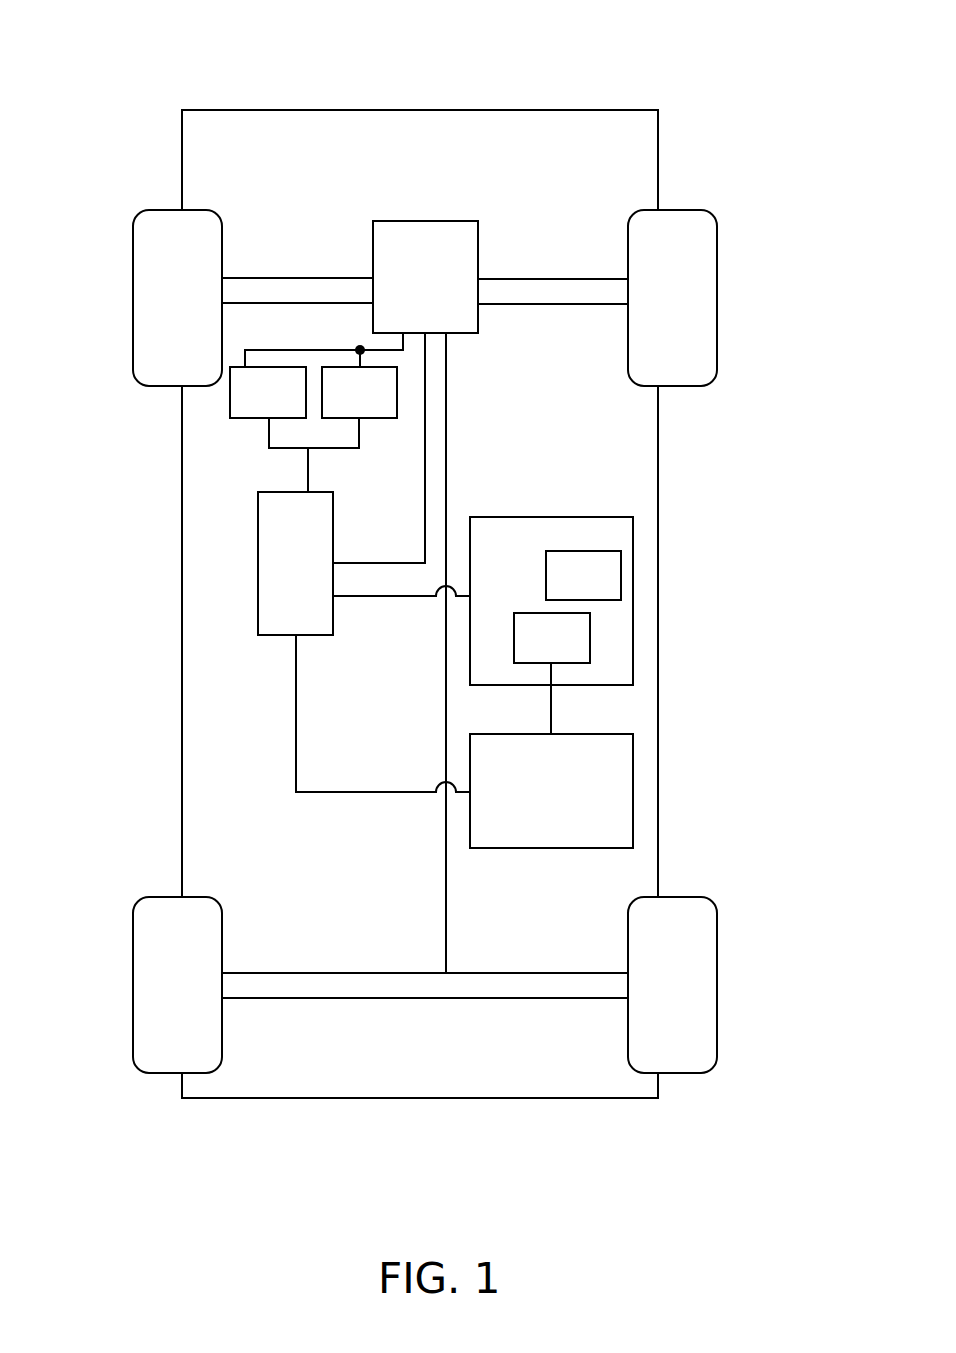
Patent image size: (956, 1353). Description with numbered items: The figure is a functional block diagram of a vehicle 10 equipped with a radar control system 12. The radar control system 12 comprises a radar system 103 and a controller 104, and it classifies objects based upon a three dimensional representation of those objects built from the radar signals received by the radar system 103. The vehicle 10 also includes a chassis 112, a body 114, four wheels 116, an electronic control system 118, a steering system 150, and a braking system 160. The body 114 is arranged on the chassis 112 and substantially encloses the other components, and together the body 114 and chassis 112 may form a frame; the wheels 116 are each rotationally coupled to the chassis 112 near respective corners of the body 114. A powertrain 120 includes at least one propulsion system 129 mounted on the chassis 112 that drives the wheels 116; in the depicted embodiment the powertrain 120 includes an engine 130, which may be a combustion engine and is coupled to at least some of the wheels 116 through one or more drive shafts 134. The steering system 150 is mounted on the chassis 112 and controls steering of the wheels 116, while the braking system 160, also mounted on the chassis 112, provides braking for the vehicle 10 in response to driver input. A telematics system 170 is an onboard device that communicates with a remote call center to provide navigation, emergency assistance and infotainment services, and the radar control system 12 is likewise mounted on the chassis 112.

The vehicle 10 is at (700, 108).
The radar control system 12 is at (513, 554).
The radar system 103 is at (571, 654).
The controller 104 is at (604, 591).
The chassis 112 is at (446, 900).
The body 114 is at (182, 731).
The wheels 116 is at (193, 251).
The electronic control system 118 is at (313, 530).
The powertrain 120 is at (466, 339).
The propulsion system 129 is at (419, 259).
The engine 130 is at (431, 257).
The drive shafts 134 is at (341, 278).
The steering system 150 is at (288, 407).
The braking system 160 is at (379, 407).
The telematics system 170 is at (528, 772).